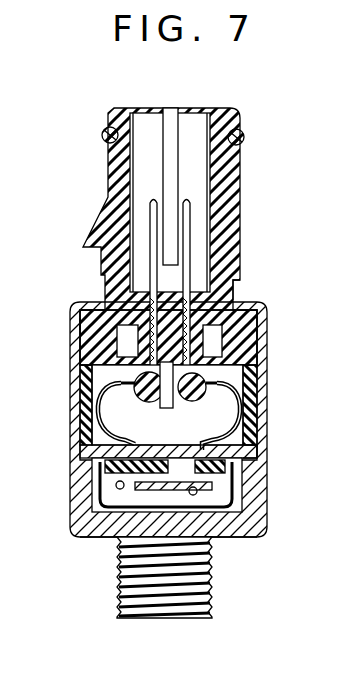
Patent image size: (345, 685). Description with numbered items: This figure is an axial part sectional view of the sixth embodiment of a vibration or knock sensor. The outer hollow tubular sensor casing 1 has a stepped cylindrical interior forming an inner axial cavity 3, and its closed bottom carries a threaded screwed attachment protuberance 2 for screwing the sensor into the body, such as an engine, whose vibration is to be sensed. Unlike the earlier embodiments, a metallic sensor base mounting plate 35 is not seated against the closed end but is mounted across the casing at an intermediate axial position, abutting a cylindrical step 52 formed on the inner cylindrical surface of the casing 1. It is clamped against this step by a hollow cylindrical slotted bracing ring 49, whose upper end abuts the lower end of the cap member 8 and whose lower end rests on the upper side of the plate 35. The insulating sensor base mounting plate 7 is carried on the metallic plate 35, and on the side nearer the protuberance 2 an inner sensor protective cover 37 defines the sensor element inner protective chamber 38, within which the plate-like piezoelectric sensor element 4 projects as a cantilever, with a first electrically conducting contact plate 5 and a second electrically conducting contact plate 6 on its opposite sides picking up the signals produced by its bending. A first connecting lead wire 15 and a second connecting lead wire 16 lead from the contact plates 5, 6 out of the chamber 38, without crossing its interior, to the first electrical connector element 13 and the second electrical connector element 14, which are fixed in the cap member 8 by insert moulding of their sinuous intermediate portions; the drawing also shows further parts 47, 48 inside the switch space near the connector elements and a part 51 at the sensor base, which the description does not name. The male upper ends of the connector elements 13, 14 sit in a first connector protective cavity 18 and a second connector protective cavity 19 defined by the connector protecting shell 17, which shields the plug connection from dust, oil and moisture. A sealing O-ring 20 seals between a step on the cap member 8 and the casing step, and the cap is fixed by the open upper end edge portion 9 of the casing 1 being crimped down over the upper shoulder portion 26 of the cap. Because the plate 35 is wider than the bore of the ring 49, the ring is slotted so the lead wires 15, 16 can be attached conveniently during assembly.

The outer hollow tubular sensor casing 1 is at (254, 512).
The screwed attachment protuberance 2 is at (212, 586).
The inner axial cavity 3 is at (85, 400).
The sensor element 4 is at (218, 498).
The first electrically conducting contact plate 5 is at (163, 450).
The second electrically conducting contact plate 6 is at (157, 474).
The insulating sensor base mounting plate 7 is at (105, 471).
The end closing cap member 8 is at (234, 325).
The open upper end edge portion 9 is at (248, 306).
The first electrical connector element 13 is at (153, 199).
The second electrical connector element 14 is at (187, 199).
The first connecting lead wire 15 is at (121, 383).
The second connecting lead wire 16 is at (217, 387).
The connector protecting shell 17 is at (228, 166).
The first connector protective cavity 18 is at (142, 214).
The second connector protective cavity 19 is at (202, 216).
The sealing O-ring 20 is at (253, 338).
The upper shoulder portion 26 is at (82, 318).
The metallic sensor base mounting plate 35 is at (80, 452).
The inner sensor protective cover 37 is at (100, 503).
The sensor element inner protective chamber 38 is at (223, 528).
The first contact disc 47 is at (145, 445).
The second contact disc 48 is at (197, 447).
The hollow cylindrical slotted bracing ring 49 is at (252, 390).
The rivet 51 is at (186, 497).
The cylindrical step 52 is at (255, 452).